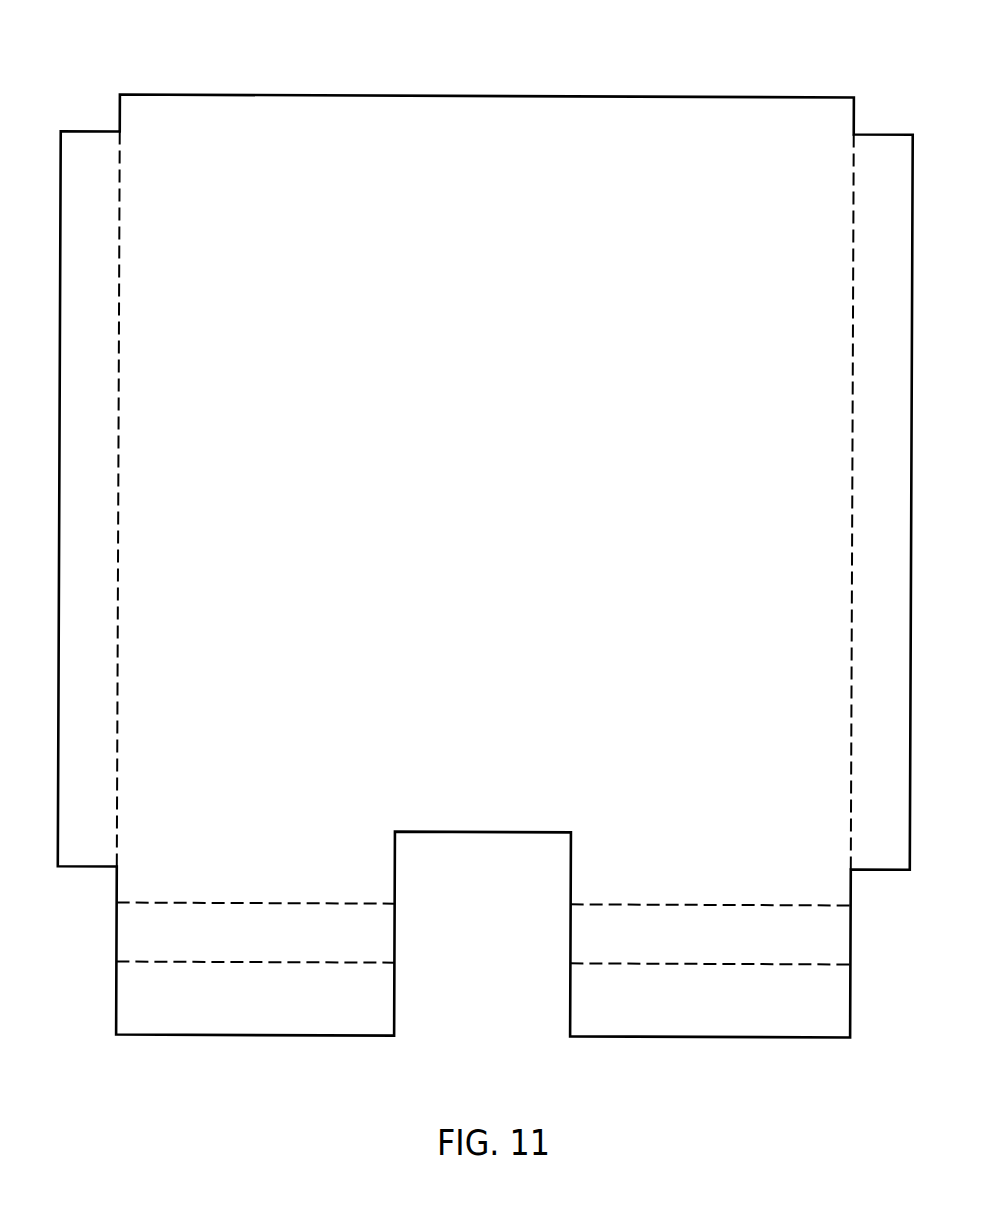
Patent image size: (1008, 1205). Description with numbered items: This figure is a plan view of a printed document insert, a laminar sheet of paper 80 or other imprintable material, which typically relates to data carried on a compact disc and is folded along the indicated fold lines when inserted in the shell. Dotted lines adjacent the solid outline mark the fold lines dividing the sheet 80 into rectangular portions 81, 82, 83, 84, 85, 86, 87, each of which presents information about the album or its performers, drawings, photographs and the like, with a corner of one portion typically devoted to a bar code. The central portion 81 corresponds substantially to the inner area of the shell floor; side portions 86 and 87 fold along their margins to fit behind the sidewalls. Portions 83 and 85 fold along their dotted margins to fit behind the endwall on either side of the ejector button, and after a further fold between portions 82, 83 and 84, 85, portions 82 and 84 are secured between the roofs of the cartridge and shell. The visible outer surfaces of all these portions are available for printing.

The laminar sheet of paper 80 is at (635, 72).
The rectangular portion 81 is at (500, 515).
The rectangular portion 82 is at (731, 1010).
The rectangular portion 83 is at (731, 949).
The rectangular portion 84 is at (274, 1007).
The rectangular portion 85 is at (274, 947).
The rectangular portion 86 is at (898, 520).
The rectangular portion 87 is at (106, 517).